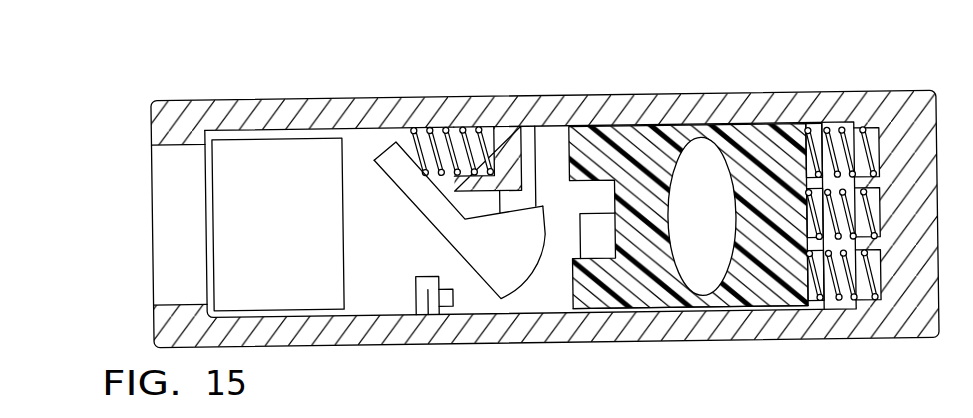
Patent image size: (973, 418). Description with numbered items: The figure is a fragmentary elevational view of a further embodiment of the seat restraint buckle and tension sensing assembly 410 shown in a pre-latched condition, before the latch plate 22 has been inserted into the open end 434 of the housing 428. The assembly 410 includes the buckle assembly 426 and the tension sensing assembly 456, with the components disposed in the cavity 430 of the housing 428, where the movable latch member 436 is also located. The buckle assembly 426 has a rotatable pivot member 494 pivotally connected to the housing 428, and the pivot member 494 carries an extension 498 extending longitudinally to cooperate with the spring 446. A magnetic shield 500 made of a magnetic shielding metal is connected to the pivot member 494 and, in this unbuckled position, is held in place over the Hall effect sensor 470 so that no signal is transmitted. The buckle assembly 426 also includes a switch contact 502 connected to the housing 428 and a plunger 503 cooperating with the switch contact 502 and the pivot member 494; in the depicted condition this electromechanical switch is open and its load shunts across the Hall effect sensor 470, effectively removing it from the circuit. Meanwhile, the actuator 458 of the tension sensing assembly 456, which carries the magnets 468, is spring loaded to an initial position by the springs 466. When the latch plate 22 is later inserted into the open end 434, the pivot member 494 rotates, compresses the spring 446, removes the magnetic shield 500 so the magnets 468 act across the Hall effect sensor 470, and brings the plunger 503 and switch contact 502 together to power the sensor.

The seat restraint buckle and tension sensing assembly 410 is at (119, 102).
The buckle assembly 426 is at (206, 93).
The housing 428 is at (275, 112).
The cavity 430 is at (337, 128).
The open end 434 is at (173, 145).
The latch plate 22 is at (190, 250).
The latch member 436 is at (283, 198).
The spring 446 is at (465, 140).
The extension 498 is at (400, 165).
The pivot member 494 is at (482, 268).
The Hall effect sensor 470 is at (525, 205).
The magnets 468 is at (640, 309).
The tension sensing assembly 456 is at (705, 116).
The actuator 458 is at (745, 299).
The magnetic shield 500 is at (602, 243).
The springs 466 is at (828, 142).
The switch contact 502 is at (417, 292).
The plunger 503 is at (430, 302).